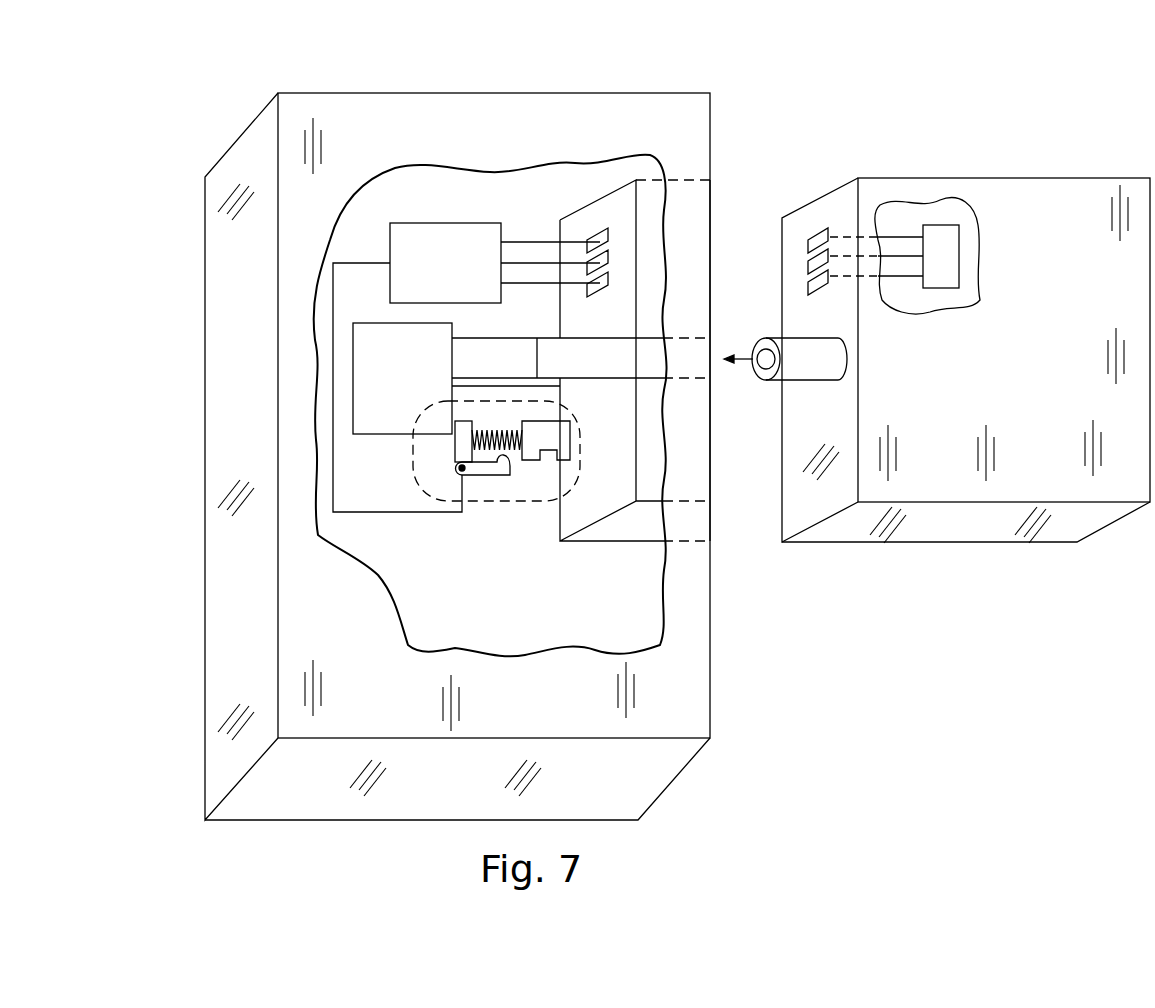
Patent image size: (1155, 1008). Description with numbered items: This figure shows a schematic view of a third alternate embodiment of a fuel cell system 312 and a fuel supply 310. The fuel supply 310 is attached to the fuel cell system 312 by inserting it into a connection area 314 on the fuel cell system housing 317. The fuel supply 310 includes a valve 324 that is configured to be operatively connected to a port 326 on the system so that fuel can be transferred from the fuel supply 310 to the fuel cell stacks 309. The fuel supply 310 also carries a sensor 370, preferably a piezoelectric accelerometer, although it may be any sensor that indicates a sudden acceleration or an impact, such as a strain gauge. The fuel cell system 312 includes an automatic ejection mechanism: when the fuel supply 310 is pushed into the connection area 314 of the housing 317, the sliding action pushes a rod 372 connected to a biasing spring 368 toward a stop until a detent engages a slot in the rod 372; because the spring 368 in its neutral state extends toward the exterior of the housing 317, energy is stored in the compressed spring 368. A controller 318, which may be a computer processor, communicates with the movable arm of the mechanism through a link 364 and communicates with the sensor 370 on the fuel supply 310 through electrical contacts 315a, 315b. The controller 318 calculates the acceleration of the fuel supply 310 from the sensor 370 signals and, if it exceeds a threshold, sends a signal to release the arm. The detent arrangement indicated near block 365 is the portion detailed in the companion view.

The fuel cell stacks 309 is at (402, 378).
The fuel supply 310 is at (1069, 162).
The fuel cell system 312 is at (552, 88).
The connection area 314 is at (712, 463).
The electrical contact 315a is at (818, 243).
The electrical contact 315b is at (608, 237).
The fuel cell system housing 317 is at (500, 134).
The controller 318 is at (495, 263).
The valve 324 is at (828, 355).
The port 326 is at (498, 360).
The link 364 is at (397, 512).
The mounting block 365 is at (650, 422).
The biasing spring 368 is at (485, 467).
The sensor 370 is at (945, 245).
The rod 372 is at (547, 437).